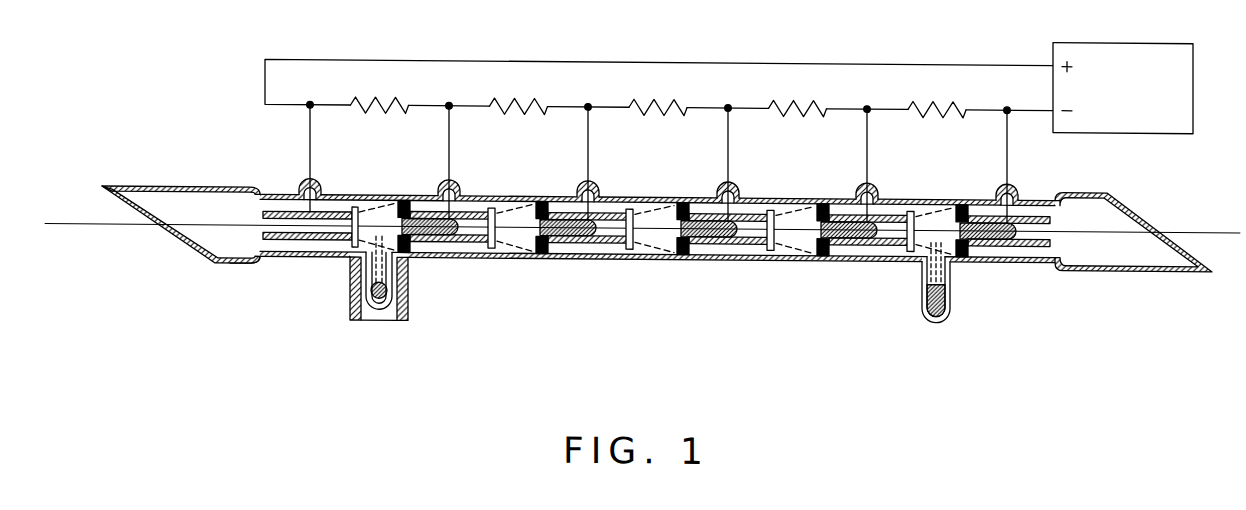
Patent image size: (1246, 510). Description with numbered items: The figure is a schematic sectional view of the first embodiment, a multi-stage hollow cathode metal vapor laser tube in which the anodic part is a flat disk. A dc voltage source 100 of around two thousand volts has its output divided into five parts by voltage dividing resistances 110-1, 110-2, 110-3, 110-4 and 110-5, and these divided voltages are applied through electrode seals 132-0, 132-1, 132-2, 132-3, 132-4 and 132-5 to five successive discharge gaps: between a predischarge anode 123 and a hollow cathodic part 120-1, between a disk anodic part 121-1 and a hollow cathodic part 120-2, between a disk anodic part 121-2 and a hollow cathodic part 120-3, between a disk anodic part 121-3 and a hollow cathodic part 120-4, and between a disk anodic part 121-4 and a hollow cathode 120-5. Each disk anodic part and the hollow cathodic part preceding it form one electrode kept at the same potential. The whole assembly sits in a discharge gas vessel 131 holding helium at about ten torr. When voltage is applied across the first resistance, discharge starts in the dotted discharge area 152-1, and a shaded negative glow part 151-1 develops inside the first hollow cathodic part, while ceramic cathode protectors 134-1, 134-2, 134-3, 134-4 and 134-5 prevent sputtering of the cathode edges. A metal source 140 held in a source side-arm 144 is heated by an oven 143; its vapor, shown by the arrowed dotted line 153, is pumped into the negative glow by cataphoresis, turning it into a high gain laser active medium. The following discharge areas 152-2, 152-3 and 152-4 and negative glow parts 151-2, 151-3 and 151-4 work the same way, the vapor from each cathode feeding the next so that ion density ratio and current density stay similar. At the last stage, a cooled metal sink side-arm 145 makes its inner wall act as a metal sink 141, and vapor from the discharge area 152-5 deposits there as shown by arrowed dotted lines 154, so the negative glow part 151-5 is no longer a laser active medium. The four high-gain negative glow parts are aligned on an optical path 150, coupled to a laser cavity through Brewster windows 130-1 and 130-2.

The dc voltage source 100 is at (1107, 37).
The voltage dividing resistance 110-1 is at (377, 98).
The voltage dividing resistance 110-2 is at (517, 98).
The voltage dividing resistance 110-3 is at (655, 98).
The voltage dividing resistance 110-4 is at (795, 98).
The voltage dividing resistance 110-5 is at (934, 98).
The hollow cathodic part 120-1 is at (418, 243).
The hollow cathodic part 120-2 is at (627, 259).
The hollow cathodic part 120-3 is at (740, 258).
The hollow cathodic part 120-4 is at (872, 250).
The hollow cathode 120-5 is at (1022, 258).
The disk anodic part 121-1 is at (488, 257).
The disk anodic part 121-2 is at (630, 264).
The disk anodic part 121-3 is at (762, 254).
The disk anodic part 121-4 is at (897, 259).
The predischarge anode 123 is at (279, 241).
The Brewster window 130-1 is at (167, 234).
The Brewster window 130-2 is at (1147, 221).
The discharge gas vessel 131 is at (241, 266).
The electrode seal 132-0 is at (307, 188).
The electrode seal 132-1 is at (452, 185).
The electrode seal 132-2 is at (593, 186).
The electrode seal 132-3 is at (733, 183).
The electrode seal 132-4 is at (873, 180).
The electrode seal 132-5 is at (1010, 183).
The ceramic cathode protector 134-1 is at (404, 201).
The ceramic cathode protector 134-2 is at (543, 207).
The ceramic cathode protector 134-3 is at (688, 203).
The ceramic cathode protector 134-4 is at (818, 202).
The ceramic cathode protector 134-5 is at (958, 201).
The metal source 140 is at (379, 308).
The metal sink 141 is at (949, 306).
The oven 143 is at (406, 321).
The source side-arm 144 is at (355, 322).
The metal sink side-arm 145 is at (935, 308).
The optical path 150 is at (198, 221).
The negative glow part 151-1 is at (430, 240).
The negative glow part 151-2 is at (558, 237).
The negative glow part 151-3 is at (692, 237).
The negative glow part 151-4 is at (822, 236).
The negative glow part 151-5 is at (982, 241).
The discharge area 152-1 is at (375, 208).
The discharge area 152-2 is at (522, 218).
The discharge area 152-3 is at (657, 215).
The discharge area 152-4 is at (793, 214).
The discharge area 152-5 is at (938, 213).
The metal vapor flow 153 is at (350, 288).
The metal vapor flow to sink 154 is at (918, 266).